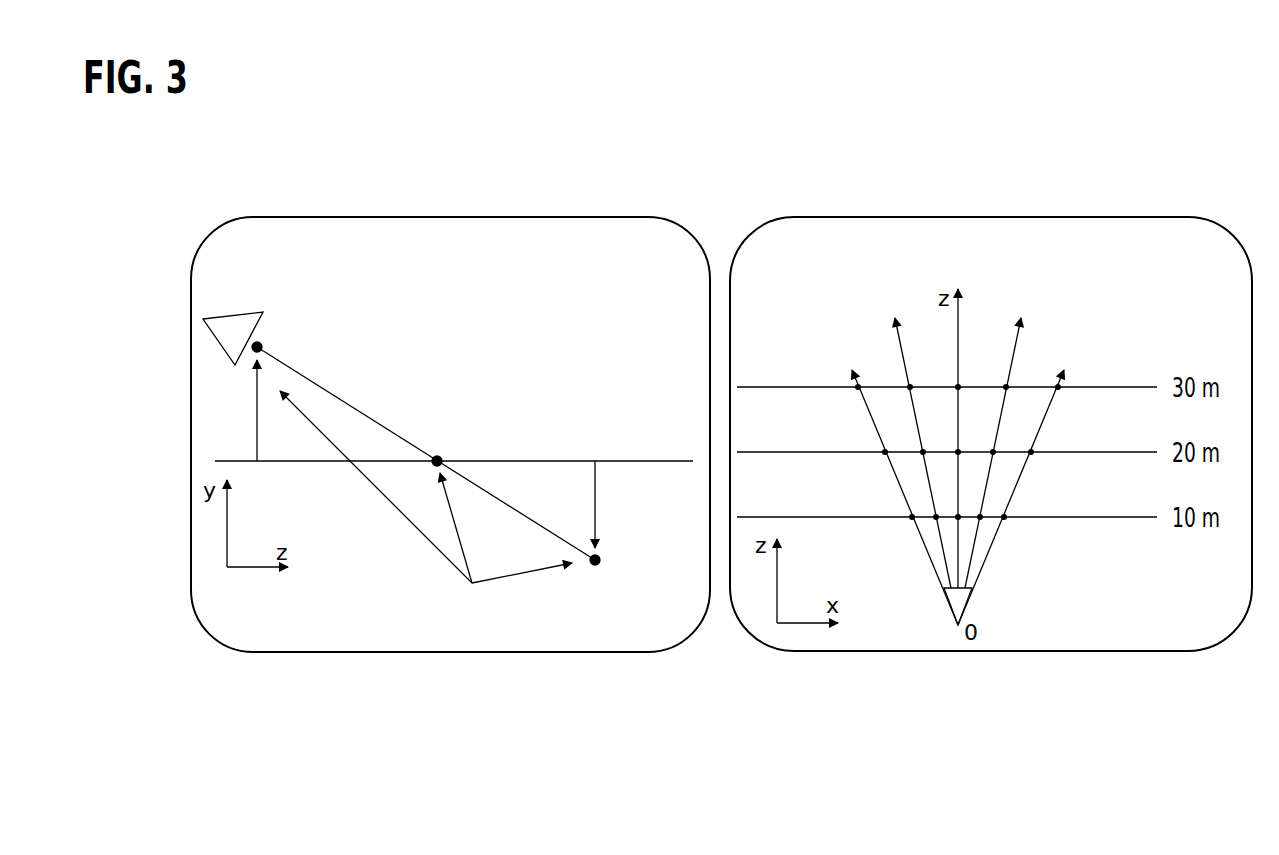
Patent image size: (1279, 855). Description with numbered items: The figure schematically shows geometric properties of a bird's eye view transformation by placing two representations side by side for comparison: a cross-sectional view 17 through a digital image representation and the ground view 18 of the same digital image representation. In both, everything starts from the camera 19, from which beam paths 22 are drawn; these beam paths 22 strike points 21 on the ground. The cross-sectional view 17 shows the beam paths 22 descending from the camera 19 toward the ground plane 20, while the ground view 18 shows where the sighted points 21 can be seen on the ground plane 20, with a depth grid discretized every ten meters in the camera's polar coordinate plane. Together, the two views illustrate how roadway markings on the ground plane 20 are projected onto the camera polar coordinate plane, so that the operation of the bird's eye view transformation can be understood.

The cross-sectional view 17 is at (652, 219).
The ground view 18 is at (1197, 225).
The camera 19 is at (238, 328).
The ground plane 20 is at (625, 457).
The points 21 is at (438, 455).
The beam paths 22 is at (373, 418).